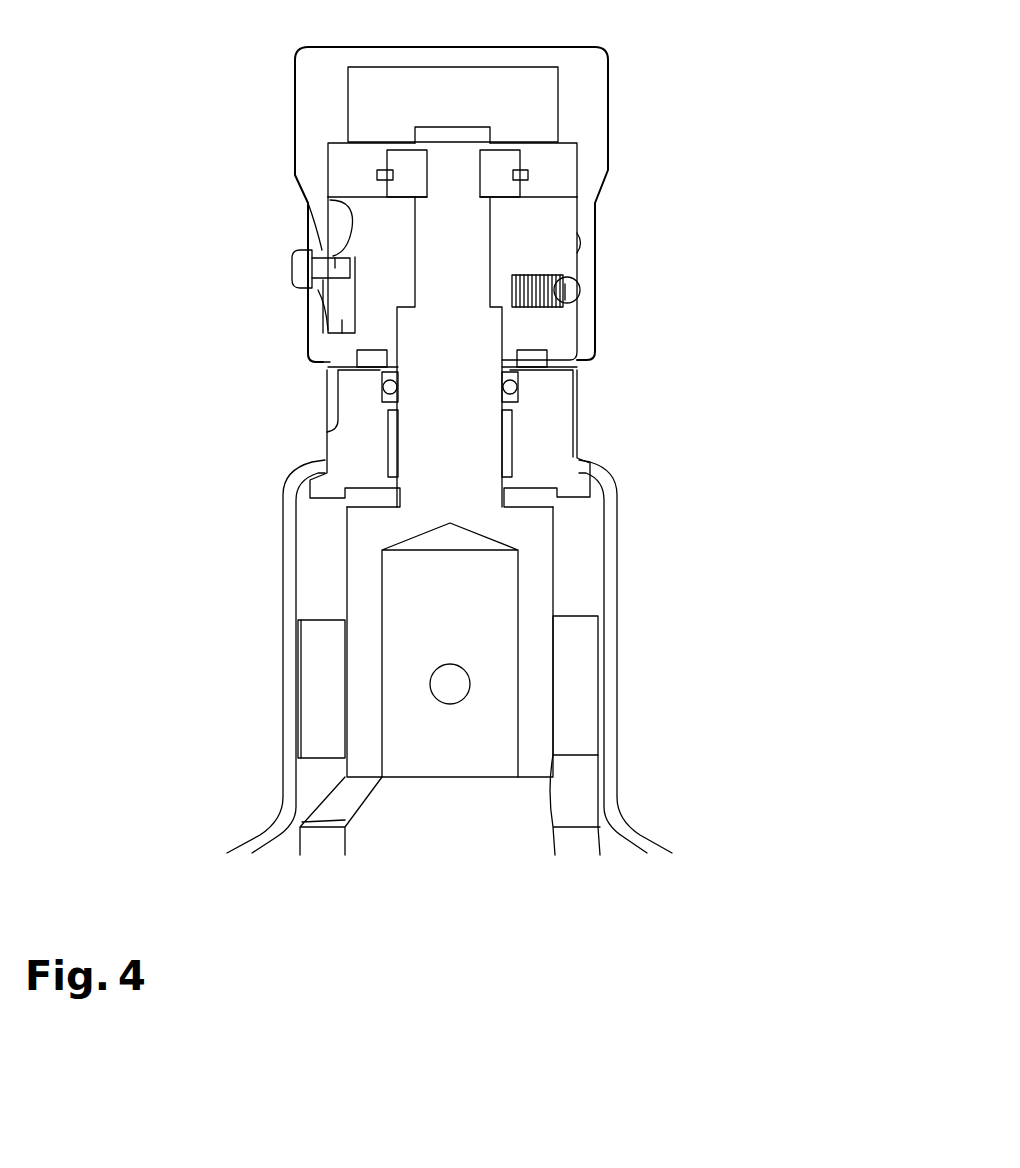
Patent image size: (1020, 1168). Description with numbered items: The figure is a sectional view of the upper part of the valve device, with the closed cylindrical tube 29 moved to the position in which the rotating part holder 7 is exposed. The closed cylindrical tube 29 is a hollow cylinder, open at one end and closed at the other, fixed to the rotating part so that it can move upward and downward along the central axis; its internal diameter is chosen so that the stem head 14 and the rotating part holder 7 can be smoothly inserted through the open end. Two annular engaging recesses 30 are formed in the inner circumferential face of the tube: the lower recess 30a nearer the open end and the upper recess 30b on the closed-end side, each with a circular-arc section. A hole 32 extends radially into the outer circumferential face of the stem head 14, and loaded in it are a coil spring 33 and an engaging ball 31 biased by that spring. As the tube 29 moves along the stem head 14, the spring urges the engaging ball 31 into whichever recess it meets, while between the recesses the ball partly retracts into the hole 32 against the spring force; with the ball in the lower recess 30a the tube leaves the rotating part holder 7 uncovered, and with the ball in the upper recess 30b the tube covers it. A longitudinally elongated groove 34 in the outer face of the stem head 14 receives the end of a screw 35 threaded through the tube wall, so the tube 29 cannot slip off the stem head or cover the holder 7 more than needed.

The rotating part holder 7 is at (558, 432).
The stem head 14 is at (527, 215).
The closed cylindrical tube 29 is at (592, 65).
The engaging recesses 30 is at (195, 278).
The lower recess 30a is at (330, 300).
The upper recess 30b is at (316, 250).
The engaging ball 31 is at (567, 307).
The hole 32 is at (560, 197).
The coil spring 33 is at (562, 190).
The longitudinally elongated groove 34 is at (315, 362).
The screw 35 is at (345, 250).